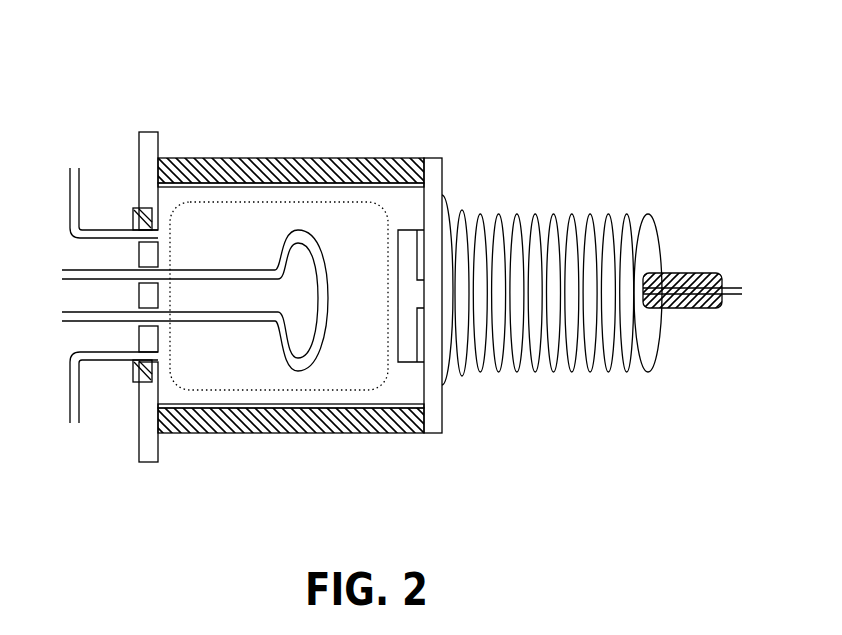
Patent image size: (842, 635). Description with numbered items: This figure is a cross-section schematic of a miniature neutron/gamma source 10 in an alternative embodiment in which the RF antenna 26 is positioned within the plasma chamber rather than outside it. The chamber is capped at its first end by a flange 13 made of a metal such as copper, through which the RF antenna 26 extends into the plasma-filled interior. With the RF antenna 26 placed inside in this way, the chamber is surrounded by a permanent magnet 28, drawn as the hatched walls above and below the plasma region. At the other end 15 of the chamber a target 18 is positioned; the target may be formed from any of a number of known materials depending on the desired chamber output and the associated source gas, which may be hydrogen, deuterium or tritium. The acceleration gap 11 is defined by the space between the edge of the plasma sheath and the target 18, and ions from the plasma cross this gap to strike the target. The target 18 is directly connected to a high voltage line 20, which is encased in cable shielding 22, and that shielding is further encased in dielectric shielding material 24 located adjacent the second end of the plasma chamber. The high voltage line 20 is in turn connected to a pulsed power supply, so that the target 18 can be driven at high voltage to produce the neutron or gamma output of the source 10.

The miniature neutron/gamma source 10 is at (192, 92).
The acceleration gap 11 is at (397, 209).
The flange 13 is at (147, 413).
The other end 15 is at (442, 173).
The target 18 is at (413, 353).
The high voltage line 20 is at (733, 288).
The cable shielding 22 is at (700, 273).
The dielectric shielding material 24 is at (590, 215).
The RF antenna 26 is at (77, 270).
The permanent magnet 28 is at (261, 160).